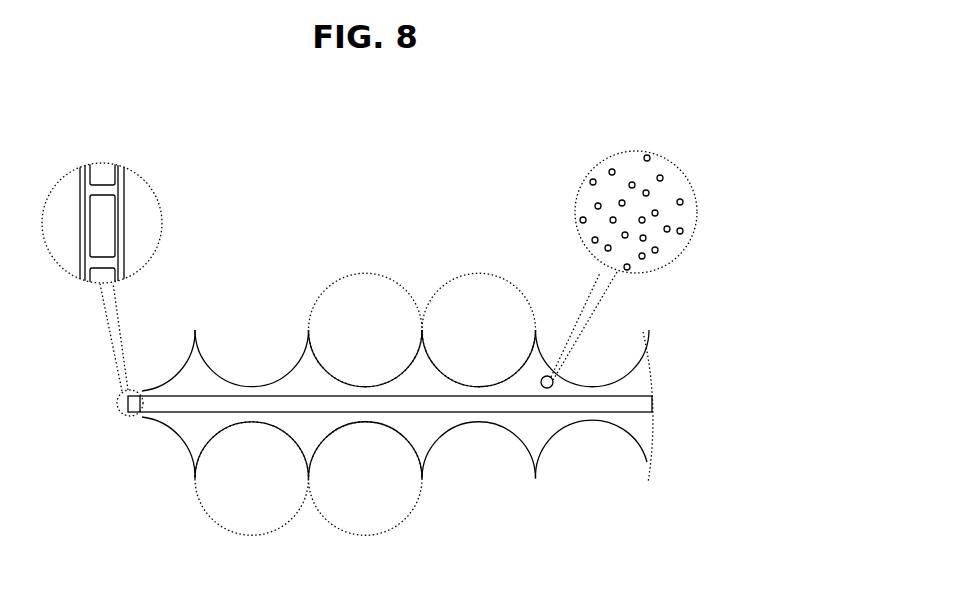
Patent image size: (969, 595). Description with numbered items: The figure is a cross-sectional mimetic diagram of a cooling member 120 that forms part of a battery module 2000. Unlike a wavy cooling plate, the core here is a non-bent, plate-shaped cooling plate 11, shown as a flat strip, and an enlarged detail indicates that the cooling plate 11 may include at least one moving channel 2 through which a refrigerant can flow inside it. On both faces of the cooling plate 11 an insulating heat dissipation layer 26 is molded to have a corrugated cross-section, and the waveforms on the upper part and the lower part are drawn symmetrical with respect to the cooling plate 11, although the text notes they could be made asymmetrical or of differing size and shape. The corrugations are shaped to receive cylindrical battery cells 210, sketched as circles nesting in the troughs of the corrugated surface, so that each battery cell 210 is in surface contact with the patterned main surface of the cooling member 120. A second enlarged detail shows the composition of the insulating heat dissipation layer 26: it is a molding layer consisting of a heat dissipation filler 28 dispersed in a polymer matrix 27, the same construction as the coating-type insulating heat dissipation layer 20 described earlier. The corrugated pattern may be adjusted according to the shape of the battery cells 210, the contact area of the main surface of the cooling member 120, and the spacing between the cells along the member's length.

The battery module 2000 is at (106, 116).
The moving channel 2 is at (108, 210).
The cooling plate 11 is at (378, 295).
The battery cell 210 is at (468, 290).
The insulating heat dissipation layer 20 is at (584, 269).
The heat dissipation filler 28 is at (609, 170).
The polymer matrix 27 is at (520, 173).
The insulating heat dissipation layer 26 is at (643, 377).
The cooling member 120 is at (410, 342).